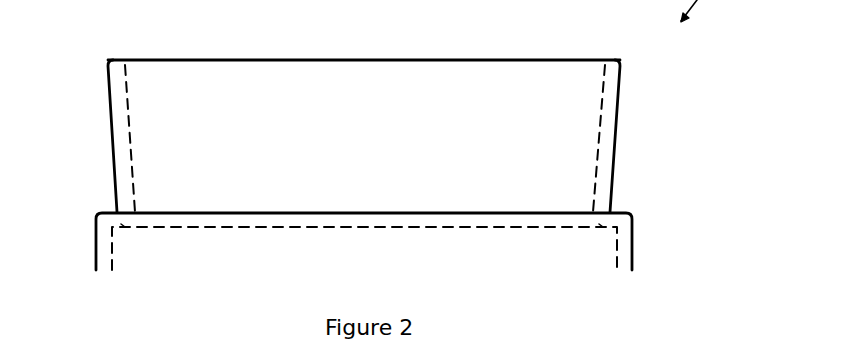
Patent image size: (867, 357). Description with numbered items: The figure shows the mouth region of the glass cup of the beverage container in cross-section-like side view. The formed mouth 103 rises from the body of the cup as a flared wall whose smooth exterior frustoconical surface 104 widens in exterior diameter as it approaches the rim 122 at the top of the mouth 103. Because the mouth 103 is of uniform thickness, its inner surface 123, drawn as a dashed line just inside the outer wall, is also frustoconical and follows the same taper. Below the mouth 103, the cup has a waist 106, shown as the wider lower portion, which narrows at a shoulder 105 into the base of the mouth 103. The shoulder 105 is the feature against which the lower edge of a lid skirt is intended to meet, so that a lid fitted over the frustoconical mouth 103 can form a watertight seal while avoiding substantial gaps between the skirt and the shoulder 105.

The rim 122 is at (468, 60).
The formed mouth 103 is at (110, 146).
The exterior frustoconical surface 104 is at (616, 146).
The inner surface 123 is at (131, 152).
The shoulder 105 is at (622, 212).
The waist 106 is at (633, 248).